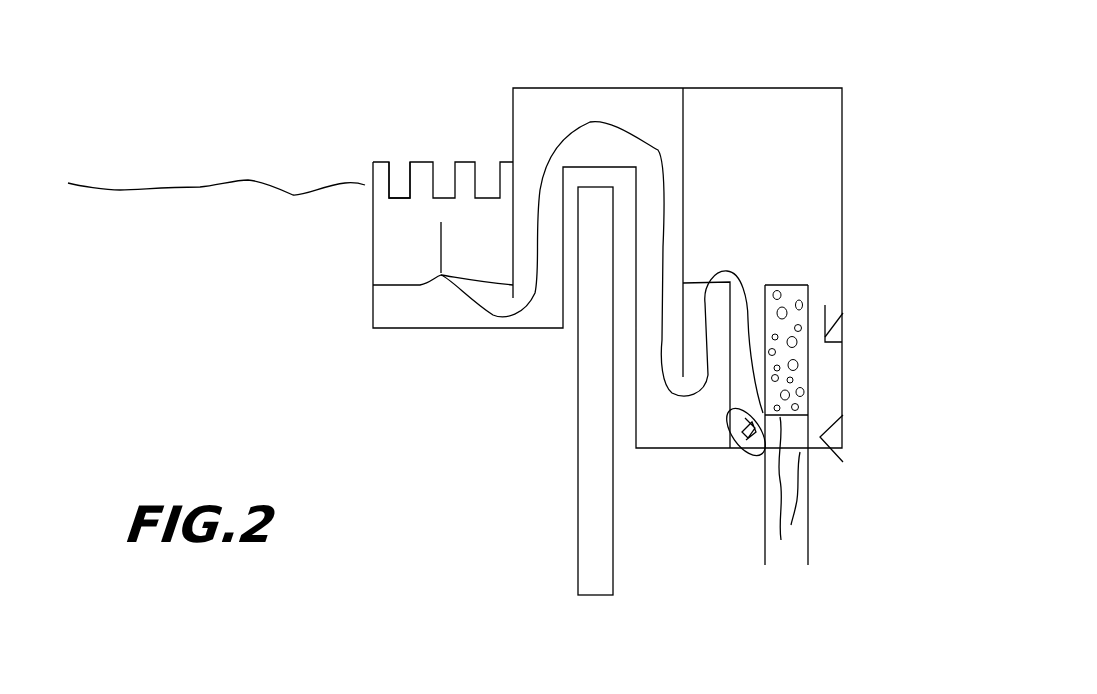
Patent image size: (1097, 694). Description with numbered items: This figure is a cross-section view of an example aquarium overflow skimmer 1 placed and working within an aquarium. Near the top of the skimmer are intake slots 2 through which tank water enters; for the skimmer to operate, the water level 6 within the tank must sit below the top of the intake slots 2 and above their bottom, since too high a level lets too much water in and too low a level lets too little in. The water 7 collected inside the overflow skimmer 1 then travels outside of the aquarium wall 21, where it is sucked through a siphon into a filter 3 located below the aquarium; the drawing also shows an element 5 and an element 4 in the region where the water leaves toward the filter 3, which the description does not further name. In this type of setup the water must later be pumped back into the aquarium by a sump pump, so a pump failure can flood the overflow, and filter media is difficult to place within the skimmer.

The aquarium overflow skimmer 1 is at (386, 224).
The intake slots 2 is at (387, 157).
The filter 3 is at (817, 547).
The outlet 4 is at (807, 424).
The aeration column 5 is at (820, 359).
The water level 6 is at (186, 212).
The liquid 7 is at (388, 305).
The aquarium wall 21 is at (560, 531).